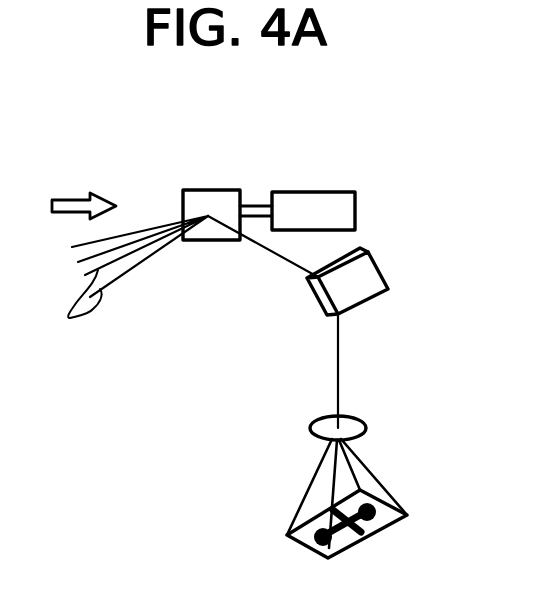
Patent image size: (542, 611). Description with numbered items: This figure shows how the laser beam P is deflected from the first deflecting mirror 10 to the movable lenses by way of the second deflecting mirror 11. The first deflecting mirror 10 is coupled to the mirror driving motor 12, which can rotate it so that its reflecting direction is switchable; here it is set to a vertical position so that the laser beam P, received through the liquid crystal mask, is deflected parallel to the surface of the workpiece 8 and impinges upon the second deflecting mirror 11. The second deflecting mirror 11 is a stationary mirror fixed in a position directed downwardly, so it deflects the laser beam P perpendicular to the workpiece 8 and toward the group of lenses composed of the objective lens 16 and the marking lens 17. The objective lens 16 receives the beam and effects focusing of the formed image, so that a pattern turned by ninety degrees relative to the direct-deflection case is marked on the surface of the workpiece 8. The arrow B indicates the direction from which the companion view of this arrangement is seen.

The first deflecting mirror 10 is at (222, 190).
The mirror driving motor 12 is at (326, 190).
The second deflecting mirror 11 is at (387, 273).
The objective lens 16 is at (400, 398).
The marking lens 17 is at (364, 421).
The workpiece 8 is at (381, 528).
The arrow B is at (84, 186).
The laser beam P is at (81, 314).